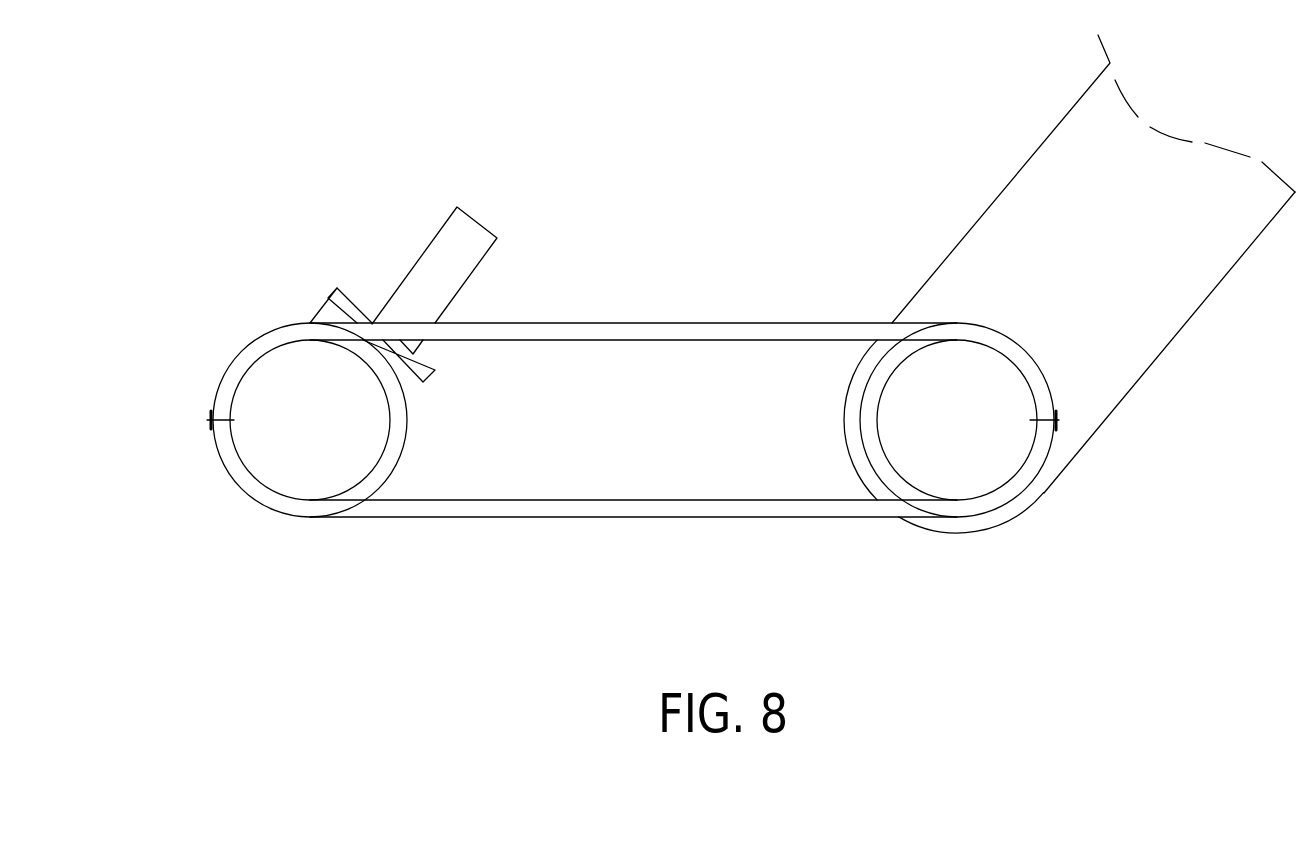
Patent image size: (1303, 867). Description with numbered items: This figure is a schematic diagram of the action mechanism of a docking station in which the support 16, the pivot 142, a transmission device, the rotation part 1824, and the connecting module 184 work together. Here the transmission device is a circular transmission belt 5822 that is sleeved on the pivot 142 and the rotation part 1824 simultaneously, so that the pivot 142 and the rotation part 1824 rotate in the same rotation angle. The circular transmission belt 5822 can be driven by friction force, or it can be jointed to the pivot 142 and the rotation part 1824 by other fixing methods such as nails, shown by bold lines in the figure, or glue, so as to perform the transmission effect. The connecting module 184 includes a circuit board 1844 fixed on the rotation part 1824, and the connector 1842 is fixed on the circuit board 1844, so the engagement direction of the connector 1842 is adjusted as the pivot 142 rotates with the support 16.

The support 16 is at (1030, 203).
The pivot 142 is at (873, 438).
The connecting module 184 is at (213, 165).
The connector 1842 is at (425, 267).
The circuit board 1844 is at (338, 297).
The rotation part 1824 is at (400, 432).
The circular transmission belt 5822 is at (625, 510).